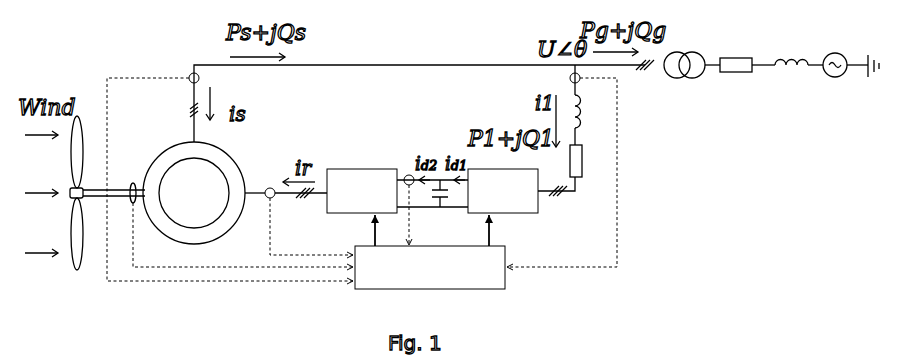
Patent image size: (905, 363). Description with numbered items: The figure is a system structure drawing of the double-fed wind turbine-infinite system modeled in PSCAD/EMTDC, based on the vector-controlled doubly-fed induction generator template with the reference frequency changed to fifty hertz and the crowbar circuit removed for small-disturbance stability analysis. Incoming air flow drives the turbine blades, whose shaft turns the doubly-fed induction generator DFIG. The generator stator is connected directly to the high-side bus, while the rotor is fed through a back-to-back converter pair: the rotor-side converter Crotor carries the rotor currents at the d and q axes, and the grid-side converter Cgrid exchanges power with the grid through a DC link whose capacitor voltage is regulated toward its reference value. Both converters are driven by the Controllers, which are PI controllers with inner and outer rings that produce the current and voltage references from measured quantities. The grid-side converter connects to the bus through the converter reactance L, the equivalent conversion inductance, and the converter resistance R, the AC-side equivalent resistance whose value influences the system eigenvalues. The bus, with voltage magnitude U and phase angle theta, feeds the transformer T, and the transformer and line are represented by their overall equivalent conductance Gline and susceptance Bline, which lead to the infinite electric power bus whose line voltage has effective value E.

The doubly-fed induction generator DFIG is at (194, 193).
The rotor-side converter Crotor is at (362, 191).
The grid-side converter Cgrid is at (503, 191).
The controllers Controllers is at (431, 267).
The converter reactance L is at (589, 112).
The converter resistance R is at (587, 161).
The transformer T is at (684, 53).
The line conductance Gline is at (729, 56).
The line susceptance Bline is at (786, 52).
The infinite bus voltage E is at (832, 52).